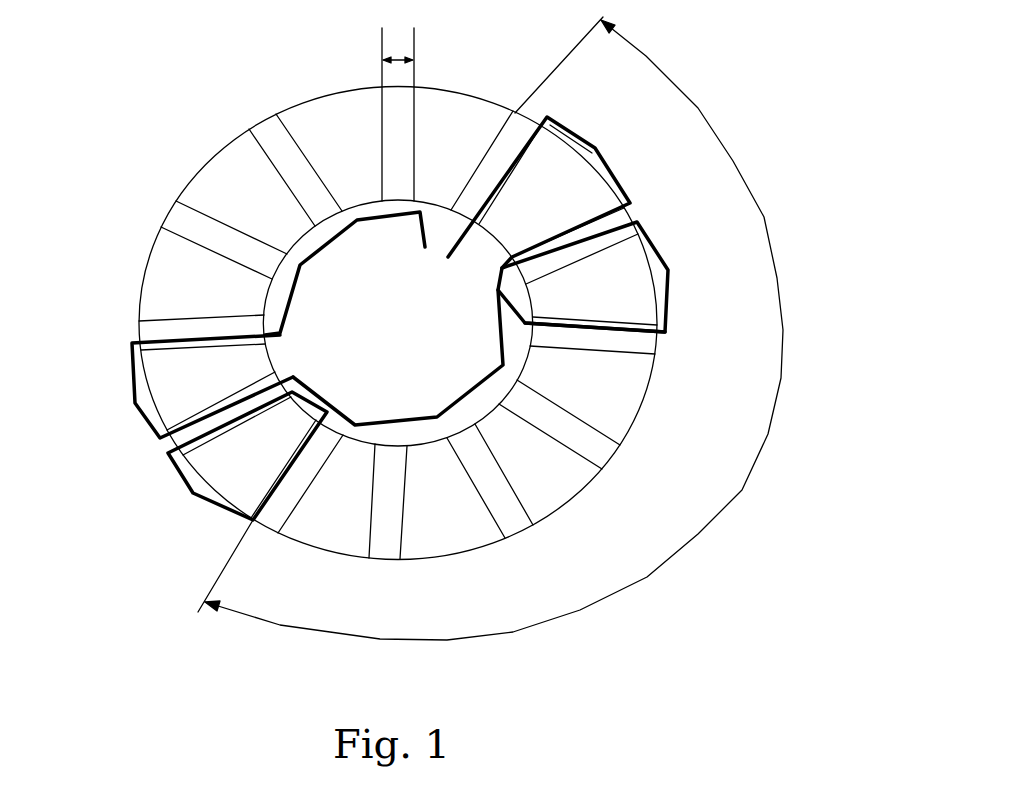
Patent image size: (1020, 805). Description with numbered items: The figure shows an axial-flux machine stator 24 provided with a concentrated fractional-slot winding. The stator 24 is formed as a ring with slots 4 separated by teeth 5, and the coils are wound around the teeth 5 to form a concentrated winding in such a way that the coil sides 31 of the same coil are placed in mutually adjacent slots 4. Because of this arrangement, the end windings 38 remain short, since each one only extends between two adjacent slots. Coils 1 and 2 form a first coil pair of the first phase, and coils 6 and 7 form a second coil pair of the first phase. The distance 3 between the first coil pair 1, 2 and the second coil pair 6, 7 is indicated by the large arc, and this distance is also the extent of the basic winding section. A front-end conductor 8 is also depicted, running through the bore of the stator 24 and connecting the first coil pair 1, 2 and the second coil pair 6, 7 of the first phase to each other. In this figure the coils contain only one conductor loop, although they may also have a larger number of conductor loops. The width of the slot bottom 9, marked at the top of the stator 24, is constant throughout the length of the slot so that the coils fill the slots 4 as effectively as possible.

The coil 1 is at (627, 193).
The coil 2 is at (668, 265).
The distance between the first and second coil pairs 3 is at (783, 345).
The slot 4 is at (596, 447).
The tooth 5 is at (625, 393).
The coil 6 is at (182, 480).
The coil 7 is at (135, 360).
The front-end conductor 8 is at (503, 357).
The slot bottom 9 is at (410, 56).
The stator 24 is at (452, 88).
The coil side 31 is at (620, 321).
The end winding 38 is at (598, 145).